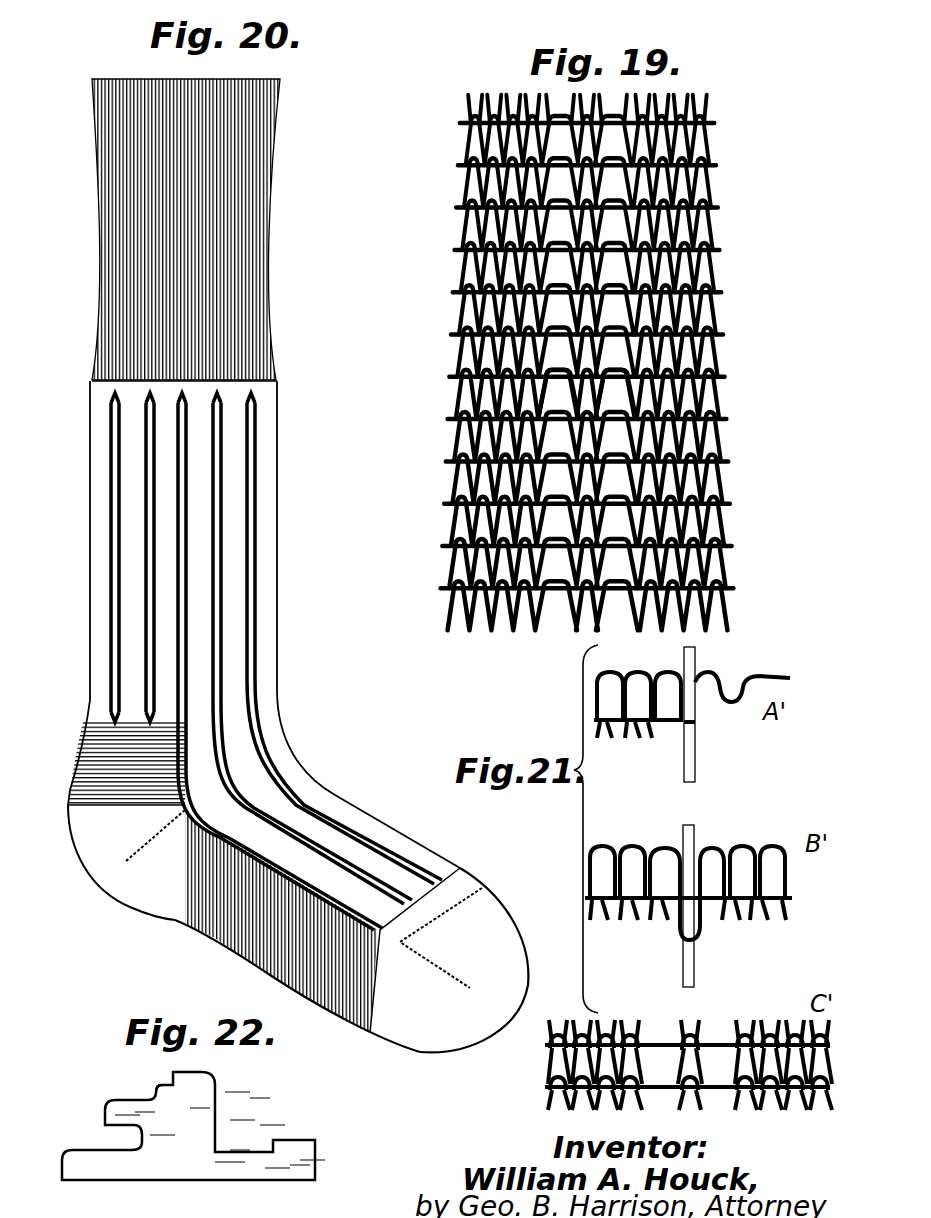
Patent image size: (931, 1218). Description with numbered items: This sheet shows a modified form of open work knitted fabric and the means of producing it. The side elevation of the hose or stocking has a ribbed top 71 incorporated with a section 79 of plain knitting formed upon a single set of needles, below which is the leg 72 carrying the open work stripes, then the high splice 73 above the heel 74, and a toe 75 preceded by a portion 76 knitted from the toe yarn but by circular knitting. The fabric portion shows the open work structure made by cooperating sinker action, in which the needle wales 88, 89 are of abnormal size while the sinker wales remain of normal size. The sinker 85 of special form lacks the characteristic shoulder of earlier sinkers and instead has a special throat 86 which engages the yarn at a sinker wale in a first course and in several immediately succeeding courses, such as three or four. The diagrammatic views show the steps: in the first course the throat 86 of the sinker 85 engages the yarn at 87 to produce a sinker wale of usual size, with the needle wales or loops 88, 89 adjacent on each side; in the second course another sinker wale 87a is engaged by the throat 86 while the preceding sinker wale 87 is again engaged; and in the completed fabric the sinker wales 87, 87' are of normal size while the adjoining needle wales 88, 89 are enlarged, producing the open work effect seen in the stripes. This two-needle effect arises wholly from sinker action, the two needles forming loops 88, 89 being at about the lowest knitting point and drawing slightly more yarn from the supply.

In FIG. 20, the ribbed top 71 is at (250, 232).
In FIG. 20, the section of plain knitting 79 is at (100, 384).
In FIG. 19, the section of plain knitting 79 is at (714, 117).
In FIG. 20, the leg 72 is at (265, 536).
In FIG. 19, the leg 72 is at (720, 316).
In FIG. 20, the needle wale or loop 88 is at (110, 549).
In FIG. 19, the needle wale or loop 88 is at (553, 376).
In FIG. 21, the needle wale or loop 88 is at (672, 676).
In FIG. 20, the needle wale or loop 89 is at (125, 578).
In FIG. 19, the needle wale or loop 89 is at (616, 376).
In FIG. 21, the needle wale or loop 89 is at (722, 676).
In FIG. 20, the high splice 73 is at (95, 758).
In FIG. 20, the heel 74 is at (110, 873).
In FIG. 20, the toe 75 is at (510, 1000).
In FIG. 20, the portion knitted from the toe yarn 76 is at (462, 880).
In FIG. 21, the sinker 85 is at (692, 707).
In FIG. 22, the sinker 85 is at (150, 1165).
In FIG. 22, the throat 86 is at (158, 1094).
In FIG. 21, the sinker wale 87 is at (688, 903).
In FIG. 21, the sinker wale 87a is at (698, 942).
In FIG. 21, the sinker wale 87' is at (678, 1054).